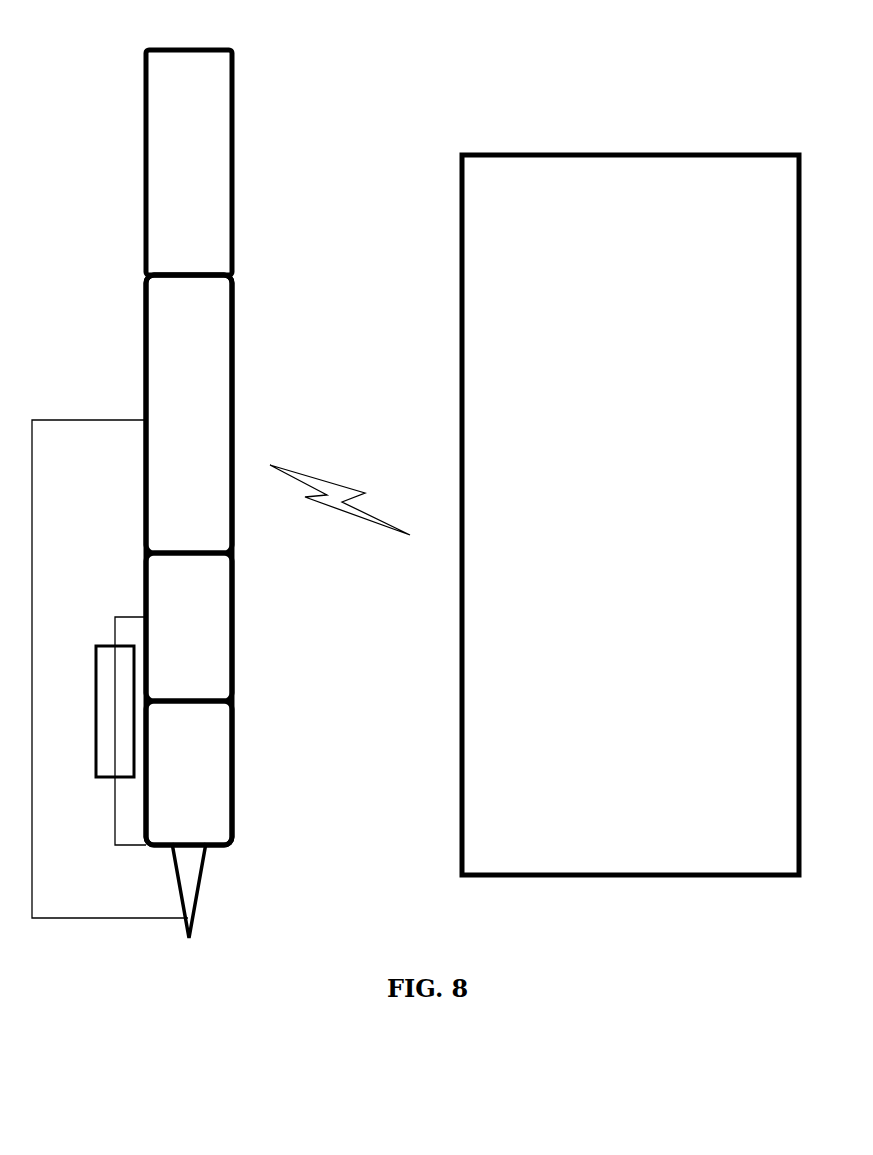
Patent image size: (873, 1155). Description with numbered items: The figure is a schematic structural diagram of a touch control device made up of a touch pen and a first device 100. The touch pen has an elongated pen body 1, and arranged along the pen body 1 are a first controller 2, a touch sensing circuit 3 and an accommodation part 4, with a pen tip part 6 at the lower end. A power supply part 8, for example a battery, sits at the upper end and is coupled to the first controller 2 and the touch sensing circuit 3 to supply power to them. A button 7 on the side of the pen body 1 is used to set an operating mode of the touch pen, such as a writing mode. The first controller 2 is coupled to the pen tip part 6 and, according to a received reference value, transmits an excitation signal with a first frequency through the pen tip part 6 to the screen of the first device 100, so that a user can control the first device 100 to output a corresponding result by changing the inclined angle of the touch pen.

The pen body 1 is at (236, 384).
The first controller 2 is at (216, 460).
The touch sensing circuit 3 is at (211, 638).
The accommodation part 4 is at (206, 788).
The pen tip part 6 is at (188, 876).
The button 7 is at (96, 690).
The power supply part 8 is at (214, 178).
The first device 100 is at (628, 155).